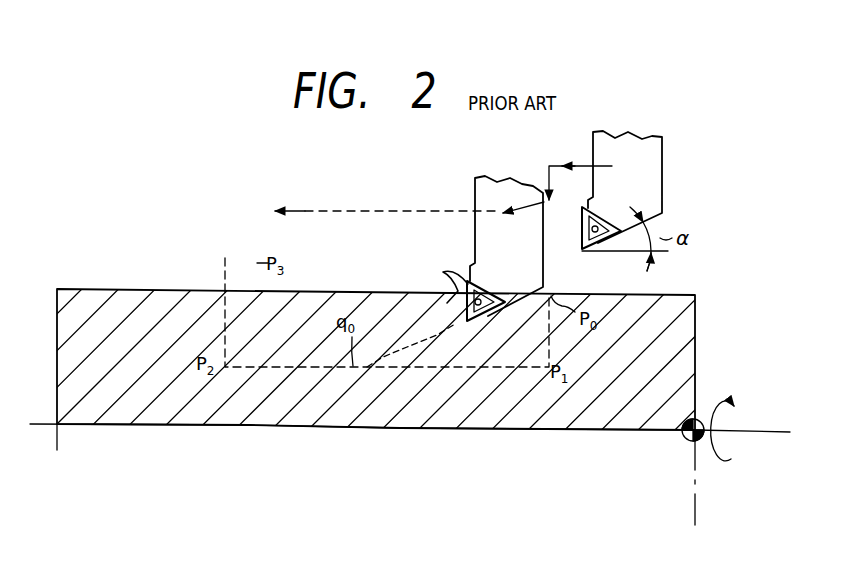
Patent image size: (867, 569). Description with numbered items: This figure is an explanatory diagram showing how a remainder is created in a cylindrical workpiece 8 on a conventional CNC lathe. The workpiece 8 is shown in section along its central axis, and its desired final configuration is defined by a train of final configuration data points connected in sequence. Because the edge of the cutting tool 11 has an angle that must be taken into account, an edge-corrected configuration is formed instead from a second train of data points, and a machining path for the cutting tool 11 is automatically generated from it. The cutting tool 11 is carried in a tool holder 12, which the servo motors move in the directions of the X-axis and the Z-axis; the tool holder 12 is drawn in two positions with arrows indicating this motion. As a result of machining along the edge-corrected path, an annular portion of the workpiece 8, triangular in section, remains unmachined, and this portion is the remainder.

The workpiece 8 is at (695, 333).
The cutting tool 11 is at (493, 288).
The tool holder 12 is at (487, 240).